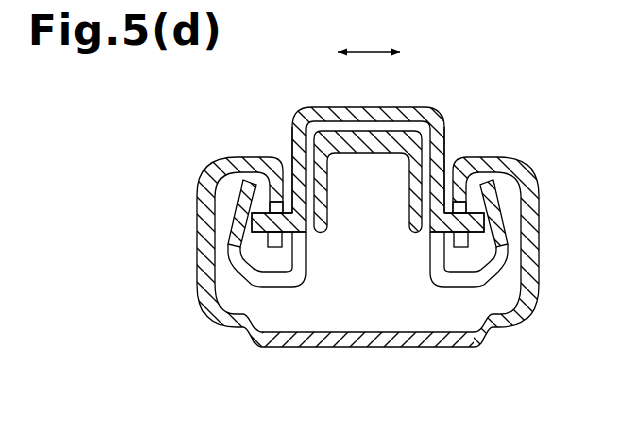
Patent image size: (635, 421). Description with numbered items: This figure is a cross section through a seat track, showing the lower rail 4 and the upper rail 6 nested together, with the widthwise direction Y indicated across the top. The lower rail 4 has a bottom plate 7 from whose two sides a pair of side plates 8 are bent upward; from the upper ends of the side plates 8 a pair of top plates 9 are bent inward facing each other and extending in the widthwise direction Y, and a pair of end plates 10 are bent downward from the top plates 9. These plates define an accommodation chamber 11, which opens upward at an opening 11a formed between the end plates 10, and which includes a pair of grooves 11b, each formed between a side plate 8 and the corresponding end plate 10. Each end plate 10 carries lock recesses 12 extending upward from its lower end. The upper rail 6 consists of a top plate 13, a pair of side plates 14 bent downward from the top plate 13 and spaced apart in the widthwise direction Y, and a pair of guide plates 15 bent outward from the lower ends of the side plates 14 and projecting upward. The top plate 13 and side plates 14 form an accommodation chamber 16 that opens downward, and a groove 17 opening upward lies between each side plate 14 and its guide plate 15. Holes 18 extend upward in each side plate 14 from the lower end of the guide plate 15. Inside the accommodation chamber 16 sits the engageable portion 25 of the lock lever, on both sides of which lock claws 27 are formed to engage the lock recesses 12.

The lower rail 4 is at (399, 351).
The upper rail 6 is at (399, 102).
The bottom plate 7 is at (337, 340).
The side plate 8 is at (203, 260).
The top plate 9 is at (218, 166).
The end plate 10 is at (233, 166).
The accommodation chamber 11 is at (372, 326).
The opening 11a is at (278, 180).
The groove 11b is at (208, 168).
The lock recess 12 is at (276, 250).
The top plate 13 is at (350, 115).
The side plate 14 is at (295, 132).
The guide plate 15 is at (252, 222).
The accommodation chamber 16 is at (383, 128).
The groove 17 is at (262, 284).
The hole 18 is at (299, 284).
The engageable portion 25 is at (368, 156).
The lock claw 27 is at (267, 207).
The widthwise direction Y is at (369, 52).